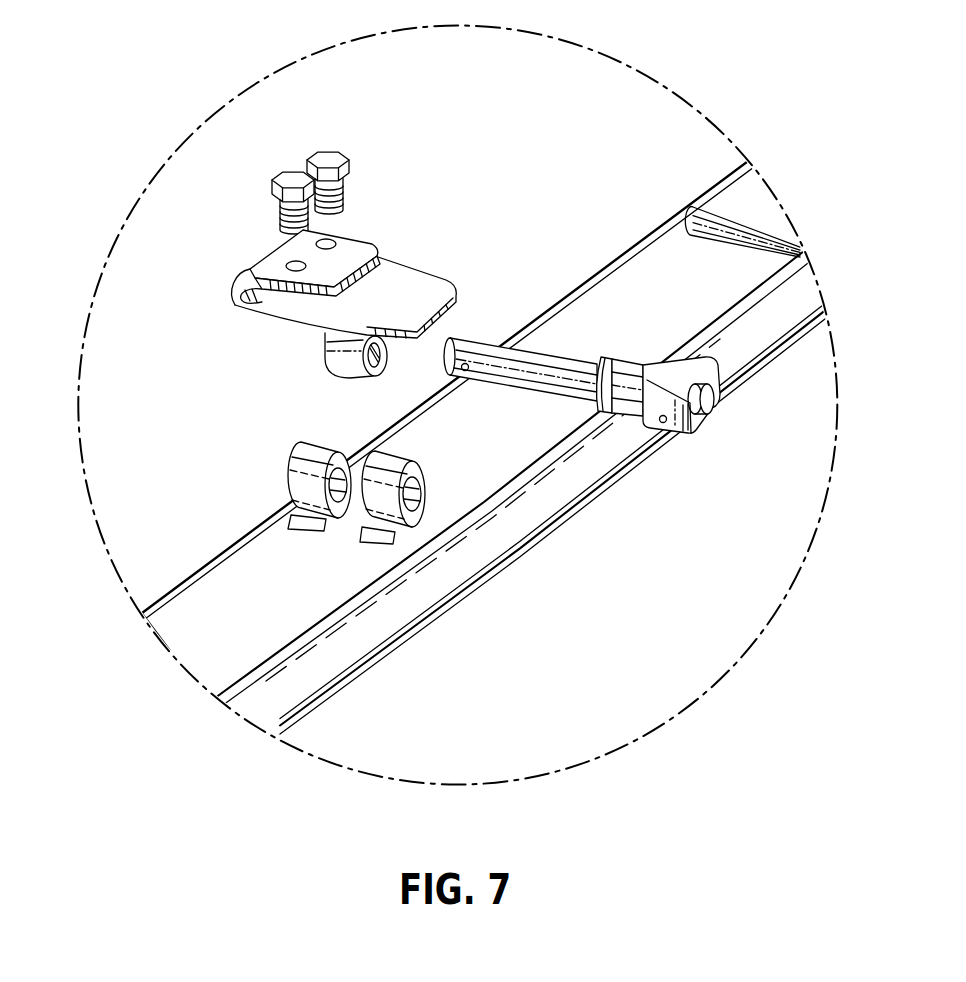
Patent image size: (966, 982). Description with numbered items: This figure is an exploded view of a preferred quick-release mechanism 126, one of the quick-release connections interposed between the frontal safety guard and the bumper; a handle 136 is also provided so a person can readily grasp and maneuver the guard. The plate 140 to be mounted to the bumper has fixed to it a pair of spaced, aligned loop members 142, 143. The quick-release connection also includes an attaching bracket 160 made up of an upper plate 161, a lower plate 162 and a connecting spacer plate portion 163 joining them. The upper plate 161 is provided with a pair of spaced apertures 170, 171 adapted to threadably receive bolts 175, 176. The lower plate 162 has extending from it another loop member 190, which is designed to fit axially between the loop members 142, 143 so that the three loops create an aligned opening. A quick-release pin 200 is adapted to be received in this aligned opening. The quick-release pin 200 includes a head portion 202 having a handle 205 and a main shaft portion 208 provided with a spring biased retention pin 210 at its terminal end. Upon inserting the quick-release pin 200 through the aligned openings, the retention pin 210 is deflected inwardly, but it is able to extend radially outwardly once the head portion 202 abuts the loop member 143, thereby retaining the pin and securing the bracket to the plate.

The quick-release mechanism 126 is at (286, 206).
The handle 136 is at (758, 221).
The plate 140 is at (207, 600).
The loop member 142 is at (298, 483).
The loop member 143 is at (385, 508).
The attaching bracket 160 is at (286, 291).
The upper plate 161 is at (334, 240).
The lower plate 162 is at (417, 288).
The connecting spacer plate portion 163 is at (228, 293).
The aperture 170 is at (293, 263).
The aperture 171 is at (333, 243).
The bolt 175 is at (296, 171).
The bolt 176 is at (333, 152).
The loop member 190 is at (330, 352).
The quick-release pin 200 is at (614, 531).
The head portion 202 is at (648, 368).
The handle 205 is at (690, 420).
The main shaft portion 208 is at (532, 362).
The spring biased retention pin 210 is at (441, 362).